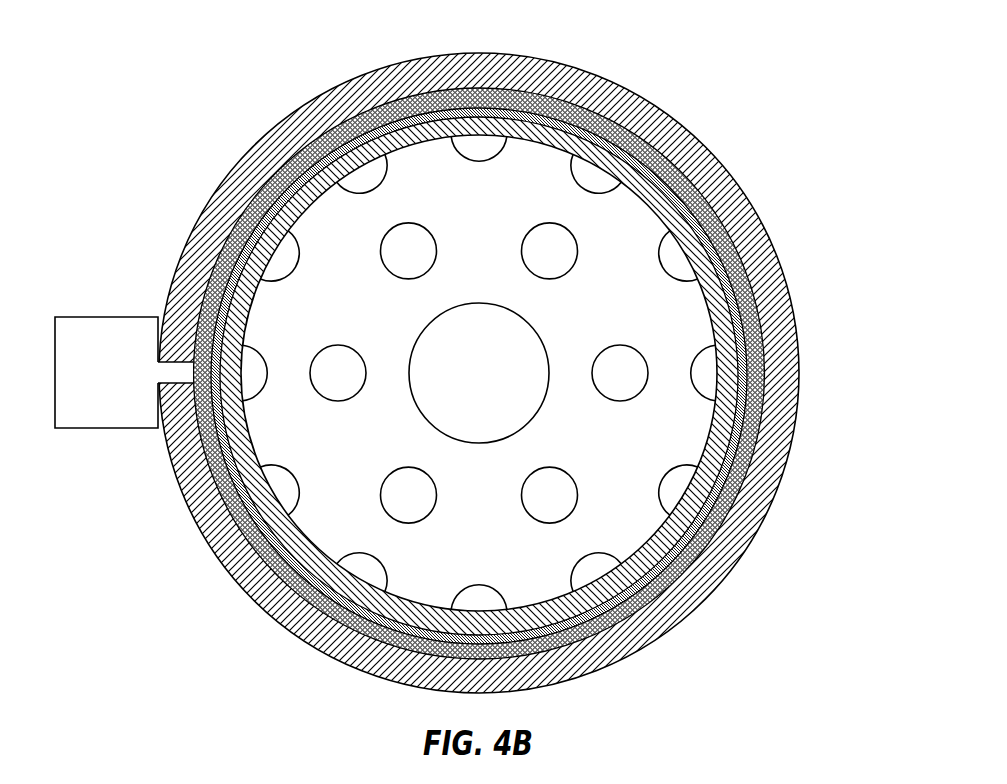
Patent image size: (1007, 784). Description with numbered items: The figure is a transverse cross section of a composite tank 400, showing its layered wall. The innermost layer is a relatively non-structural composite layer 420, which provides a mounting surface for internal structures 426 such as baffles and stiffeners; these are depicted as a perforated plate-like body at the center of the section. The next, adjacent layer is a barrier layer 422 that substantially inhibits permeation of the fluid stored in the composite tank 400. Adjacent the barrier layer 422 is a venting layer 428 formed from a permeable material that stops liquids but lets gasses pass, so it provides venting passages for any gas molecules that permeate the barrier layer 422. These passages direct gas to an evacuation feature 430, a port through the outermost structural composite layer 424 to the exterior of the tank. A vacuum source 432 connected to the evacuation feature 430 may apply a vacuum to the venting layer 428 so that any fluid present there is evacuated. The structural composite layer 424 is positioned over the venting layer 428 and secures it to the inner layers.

The composite tank 400 is at (458, 359).
The non-structural composite layer 420 is at (722, 296).
The barrier layer 422 is at (765, 326).
The structural composite layer 424 is at (762, 482).
The internal structures 426 is at (533, 168).
The venting layer 428 is at (763, 417).
The evacuation feature 430 is at (178, 368).
The vacuum source 432 is at (123, 386).